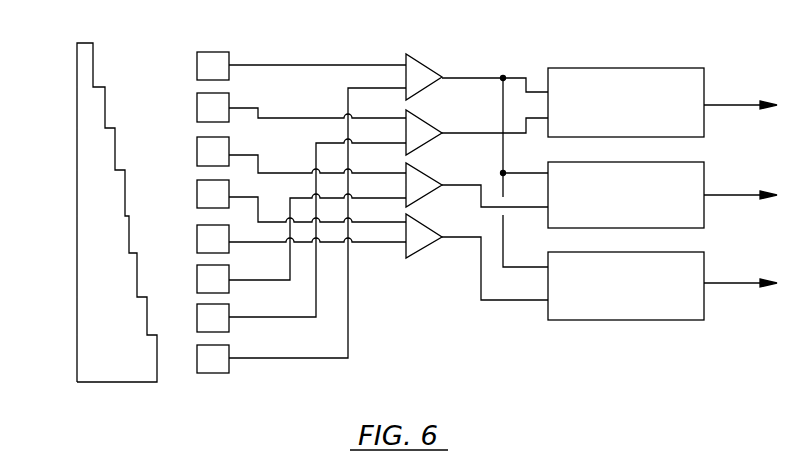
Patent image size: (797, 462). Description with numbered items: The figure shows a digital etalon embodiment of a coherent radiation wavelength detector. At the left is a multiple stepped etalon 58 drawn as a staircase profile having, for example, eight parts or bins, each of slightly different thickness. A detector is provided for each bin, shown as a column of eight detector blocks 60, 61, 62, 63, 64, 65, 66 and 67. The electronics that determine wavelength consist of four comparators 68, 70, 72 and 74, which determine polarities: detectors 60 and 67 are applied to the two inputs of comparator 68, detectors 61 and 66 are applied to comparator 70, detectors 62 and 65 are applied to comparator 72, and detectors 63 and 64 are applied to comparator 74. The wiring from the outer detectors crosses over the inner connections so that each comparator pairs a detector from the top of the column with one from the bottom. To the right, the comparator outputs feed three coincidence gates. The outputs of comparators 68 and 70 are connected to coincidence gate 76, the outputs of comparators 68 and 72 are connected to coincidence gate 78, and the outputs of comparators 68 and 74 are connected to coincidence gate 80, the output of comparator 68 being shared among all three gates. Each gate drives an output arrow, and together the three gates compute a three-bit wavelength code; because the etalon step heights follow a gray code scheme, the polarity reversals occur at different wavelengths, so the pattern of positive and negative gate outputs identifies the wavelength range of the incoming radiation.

The multiple stepped etalon 58 is at (78, 225).
The detector 60 is at (197, 62).
The detector 61 is at (197, 112).
The detector 62 is at (197, 157).
The detector 63 is at (197, 198).
The detector 64 is at (197, 242).
The detector 65 is at (197, 282).
The detector 66 is at (197, 320).
The detector 67 is at (197, 360).
The comparator 68 is at (428, 56).
The comparator 70 is at (428, 112).
The comparator 72 is at (428, 165).
The comparator 74 is at (431, 250).
The coincidence gate 76 is at (682, 68).
The coincidence gate 78 is at (706, 163).
The coincidence gate 80 is at (690, 252).